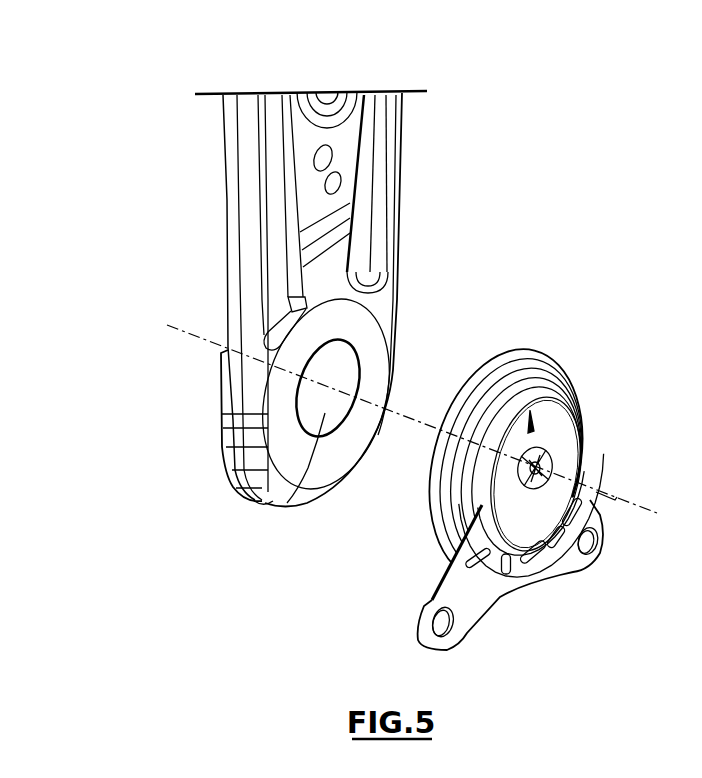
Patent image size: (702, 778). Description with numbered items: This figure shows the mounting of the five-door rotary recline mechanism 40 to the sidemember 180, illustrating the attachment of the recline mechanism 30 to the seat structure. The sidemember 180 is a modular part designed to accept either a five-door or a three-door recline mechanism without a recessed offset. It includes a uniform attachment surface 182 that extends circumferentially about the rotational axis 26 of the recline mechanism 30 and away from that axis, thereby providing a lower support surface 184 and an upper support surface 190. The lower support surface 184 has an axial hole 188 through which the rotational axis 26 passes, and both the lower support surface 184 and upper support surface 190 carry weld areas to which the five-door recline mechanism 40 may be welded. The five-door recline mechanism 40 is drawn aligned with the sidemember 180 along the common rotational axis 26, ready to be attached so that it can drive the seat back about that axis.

The rotational axis 26 is at (409, 420).
The rotary recline mechanism 30 is at (119, 226).
The five-door rotary recline mechanism 40 is at (339, 592).
The sidemember 180 is at (447, 132).
The attachment surface 182 is at (330, 280).
The lower support surface 184 is at (285, 435).
The axial hole 188 is at (327, 414).
The upper support surface 190 is at (347, 148).